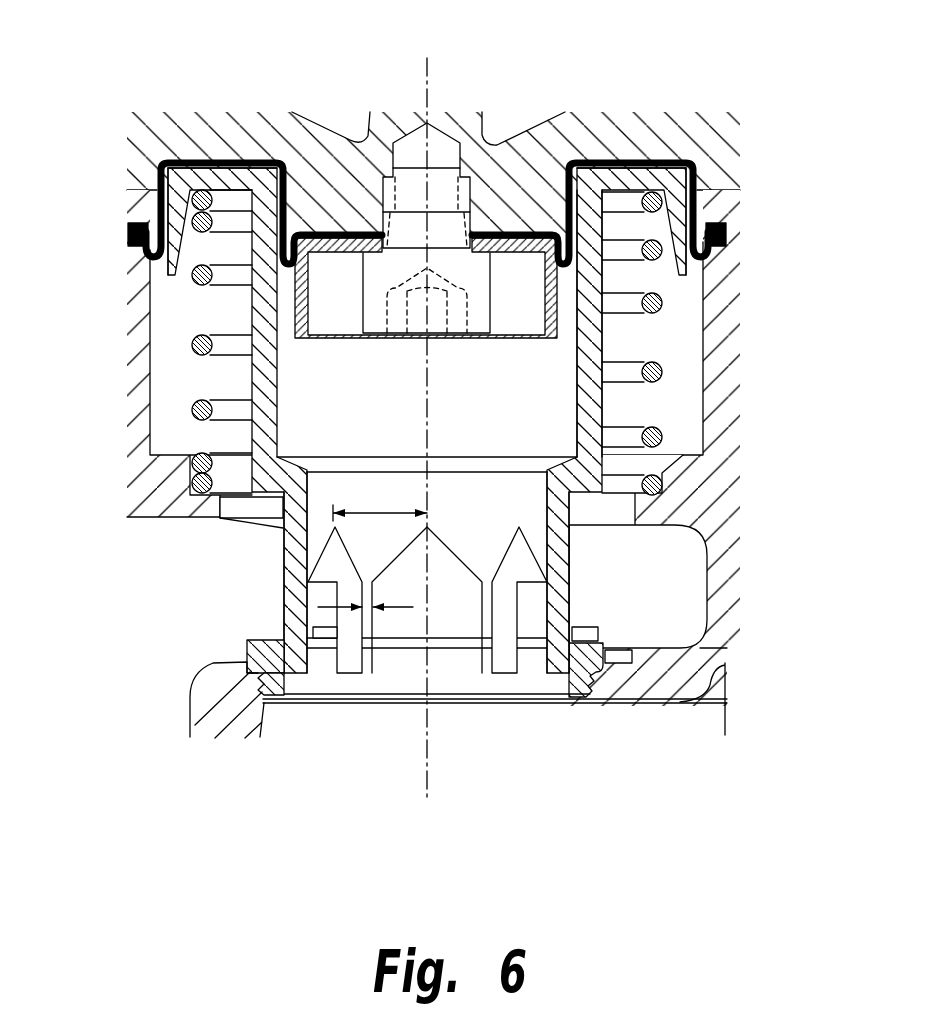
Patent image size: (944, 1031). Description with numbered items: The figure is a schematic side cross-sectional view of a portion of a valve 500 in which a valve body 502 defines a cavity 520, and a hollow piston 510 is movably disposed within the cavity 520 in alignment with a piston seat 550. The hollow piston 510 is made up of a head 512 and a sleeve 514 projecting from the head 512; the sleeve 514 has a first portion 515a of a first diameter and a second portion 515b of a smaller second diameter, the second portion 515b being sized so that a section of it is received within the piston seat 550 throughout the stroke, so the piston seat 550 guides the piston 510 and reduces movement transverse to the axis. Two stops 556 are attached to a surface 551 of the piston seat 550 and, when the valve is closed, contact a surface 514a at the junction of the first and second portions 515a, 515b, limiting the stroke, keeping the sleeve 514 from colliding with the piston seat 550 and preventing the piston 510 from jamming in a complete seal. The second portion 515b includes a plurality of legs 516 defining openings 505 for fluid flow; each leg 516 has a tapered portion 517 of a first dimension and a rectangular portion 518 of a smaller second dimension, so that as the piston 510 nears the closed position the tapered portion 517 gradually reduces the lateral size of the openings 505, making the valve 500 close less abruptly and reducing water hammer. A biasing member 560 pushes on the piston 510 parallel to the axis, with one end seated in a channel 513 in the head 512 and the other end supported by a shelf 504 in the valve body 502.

The valve 500 is at (772, 80).
The valve body 502 is at (556, 142).
The shelf 504 is at (240, 490).
The openings 505 is at (318, 583).
The hollow piston 510 is at (590, 402).
The head 512 is at (646, 192).
The channel 513 is at (718, 205).
The sleeve 514 is at (590, 343).
The surface 514a is at (600, 512).
The first portion 515a is at (700, 299).
The second portion 515b is at (575, 565).
The legs 516 is at (352, 655).
The tapered portion 517 is at (467, 518).
The rectangular portion 518 is at (512, 660).
The cavity 520 is at (173, 322).
The piston seat 550 is at (727, 697).
The surface 551 is at (603, 660).
The stops 556 is at (600, 620).
The biasing member 560 is at (600, 363).